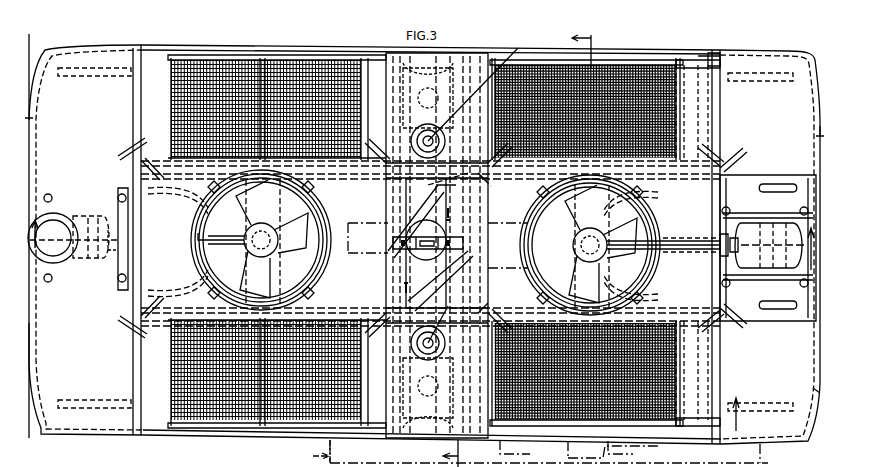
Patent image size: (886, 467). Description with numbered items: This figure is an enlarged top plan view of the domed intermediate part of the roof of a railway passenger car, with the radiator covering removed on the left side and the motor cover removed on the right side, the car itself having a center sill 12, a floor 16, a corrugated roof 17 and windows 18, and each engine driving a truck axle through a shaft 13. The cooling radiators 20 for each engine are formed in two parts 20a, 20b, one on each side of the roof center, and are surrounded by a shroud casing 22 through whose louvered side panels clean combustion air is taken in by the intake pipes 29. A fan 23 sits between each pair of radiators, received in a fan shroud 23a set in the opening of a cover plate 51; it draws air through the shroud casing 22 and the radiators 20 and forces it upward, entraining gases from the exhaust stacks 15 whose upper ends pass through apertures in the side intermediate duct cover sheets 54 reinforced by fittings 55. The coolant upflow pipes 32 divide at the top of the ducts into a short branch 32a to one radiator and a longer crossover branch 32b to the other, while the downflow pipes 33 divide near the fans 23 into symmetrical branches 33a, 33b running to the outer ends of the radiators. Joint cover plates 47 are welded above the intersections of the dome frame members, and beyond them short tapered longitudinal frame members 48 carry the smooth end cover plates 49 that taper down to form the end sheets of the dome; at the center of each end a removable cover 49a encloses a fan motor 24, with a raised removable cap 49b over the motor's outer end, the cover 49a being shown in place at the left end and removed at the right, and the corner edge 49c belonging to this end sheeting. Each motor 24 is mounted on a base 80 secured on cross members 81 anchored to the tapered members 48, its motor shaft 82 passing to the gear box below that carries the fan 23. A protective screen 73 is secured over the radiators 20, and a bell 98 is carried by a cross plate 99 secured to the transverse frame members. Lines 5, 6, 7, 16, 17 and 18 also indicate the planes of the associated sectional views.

The section line 5- 5 is at (422, 280).
The section line 6- 6 is at (606, 26).
The section line 7- 7 is at (314, 453).
The center sill 12 is at (210, 278).
The shaft 13 is at (300, 310).
The exhaust stack 15 is at (420, 118).
The floor 16 is at (573, 421).
The corrugated roof 17 is at (566, 451).
The windows 18 is at (595, 455).
The cooling radiators 20 is at (298, 50).
The radiator part 20a is at (195, 420).
The radiator part 20b is at (232, 55).
The shroud casing 22 is at (700, 50).
The fan 23 is at (186, 210).
The fan shroud 23a is at (308, 176).
The motor 24 is at (740, 245).
The intake pipe 29 is at (460, 33).
The coolant upflow pipe 32 is at (445, 182).
The upflow branch 32a is at (385, 45).
The crossover pipe 32b is at (470, 210).
The coolant downflow pipe 33 is at (430, 248).
The downflow branch 33a is at (409, 195).
The downflow branch 33b is at (412, 288).
The joint cover plates 47 is at (715, 158).
The tapered longitudinal frame members 48 is at (762, 162).
The end cover plates 49 is at (87, 120).
The removable cover 49a is at (87, 189).
The removable cap 49b is at (32, 215).
The hull corner 49c is at (34, 38).
The cover plate 51 is at (345, 200).
The side intermediate duct cover sheets 54 is at (440, 45).
The fittings 55 is at (455, 295).
The protective screen 73 is at (645, 65).
The base 80 is at (724, 258).
The cross members 81 is at (712, 229).
The motor shaft 82 is at (676, 241).
The bell 98 is at (418, 212).
The cross plate 99 is at (435, 232).